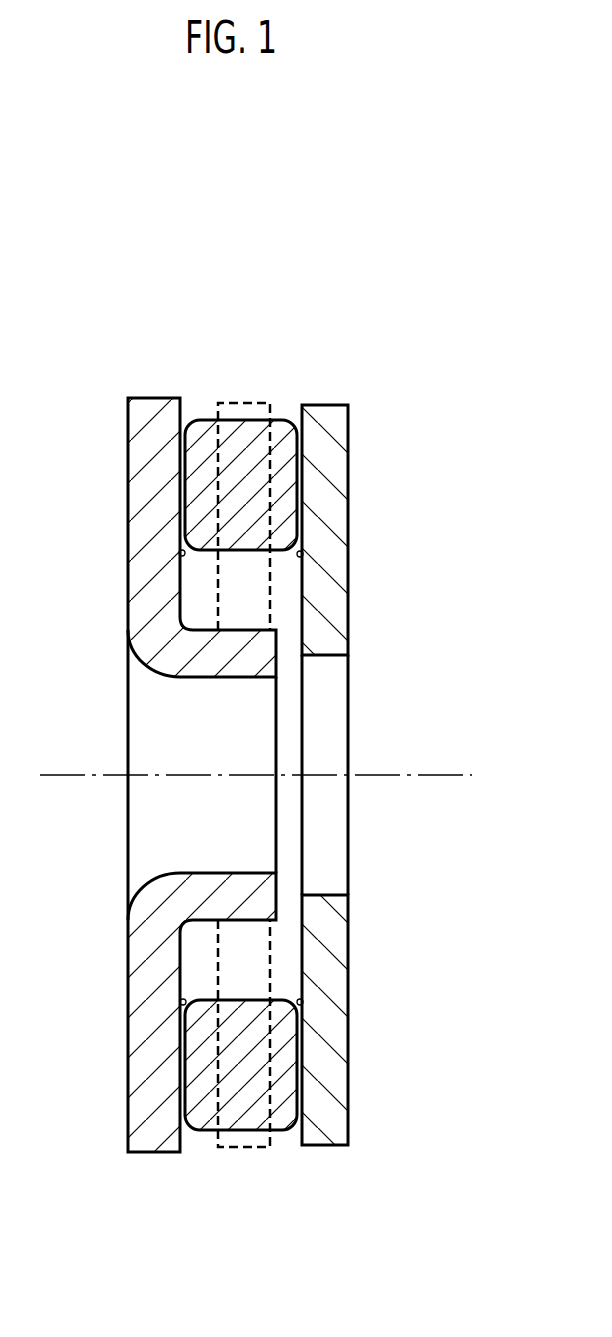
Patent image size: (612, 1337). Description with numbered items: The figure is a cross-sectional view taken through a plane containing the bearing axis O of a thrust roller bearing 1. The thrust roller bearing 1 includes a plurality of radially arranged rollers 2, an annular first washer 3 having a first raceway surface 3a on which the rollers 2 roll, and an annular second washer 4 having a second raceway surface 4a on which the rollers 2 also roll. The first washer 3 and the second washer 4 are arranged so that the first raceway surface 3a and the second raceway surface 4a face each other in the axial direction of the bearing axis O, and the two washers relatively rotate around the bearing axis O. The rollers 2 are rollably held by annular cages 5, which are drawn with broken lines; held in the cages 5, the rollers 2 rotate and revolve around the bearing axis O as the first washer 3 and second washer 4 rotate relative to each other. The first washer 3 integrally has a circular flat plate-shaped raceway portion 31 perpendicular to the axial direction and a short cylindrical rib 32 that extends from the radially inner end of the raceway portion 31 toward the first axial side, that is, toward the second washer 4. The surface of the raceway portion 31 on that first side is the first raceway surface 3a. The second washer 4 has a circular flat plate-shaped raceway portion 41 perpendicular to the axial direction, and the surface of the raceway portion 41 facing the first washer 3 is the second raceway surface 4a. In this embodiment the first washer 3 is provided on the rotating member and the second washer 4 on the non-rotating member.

The thrust roller bearing 1 is at (75, 357).
The rollers 2 is at (246, 437).
The first washer 3 is at (140, 393).
The raceway portion 31 is at (140, 487).
The rib 32 is at (210, 658).
The first raceway surface 3a is at (182, 553).
The second washer 4 is at (343, 400).
The raceway portion 41 is at (343, 488).
The second raceway surface 4a is at (300, 555).
The cages 5 is at (222, 403).
The bearing axis O is at (433, 773).